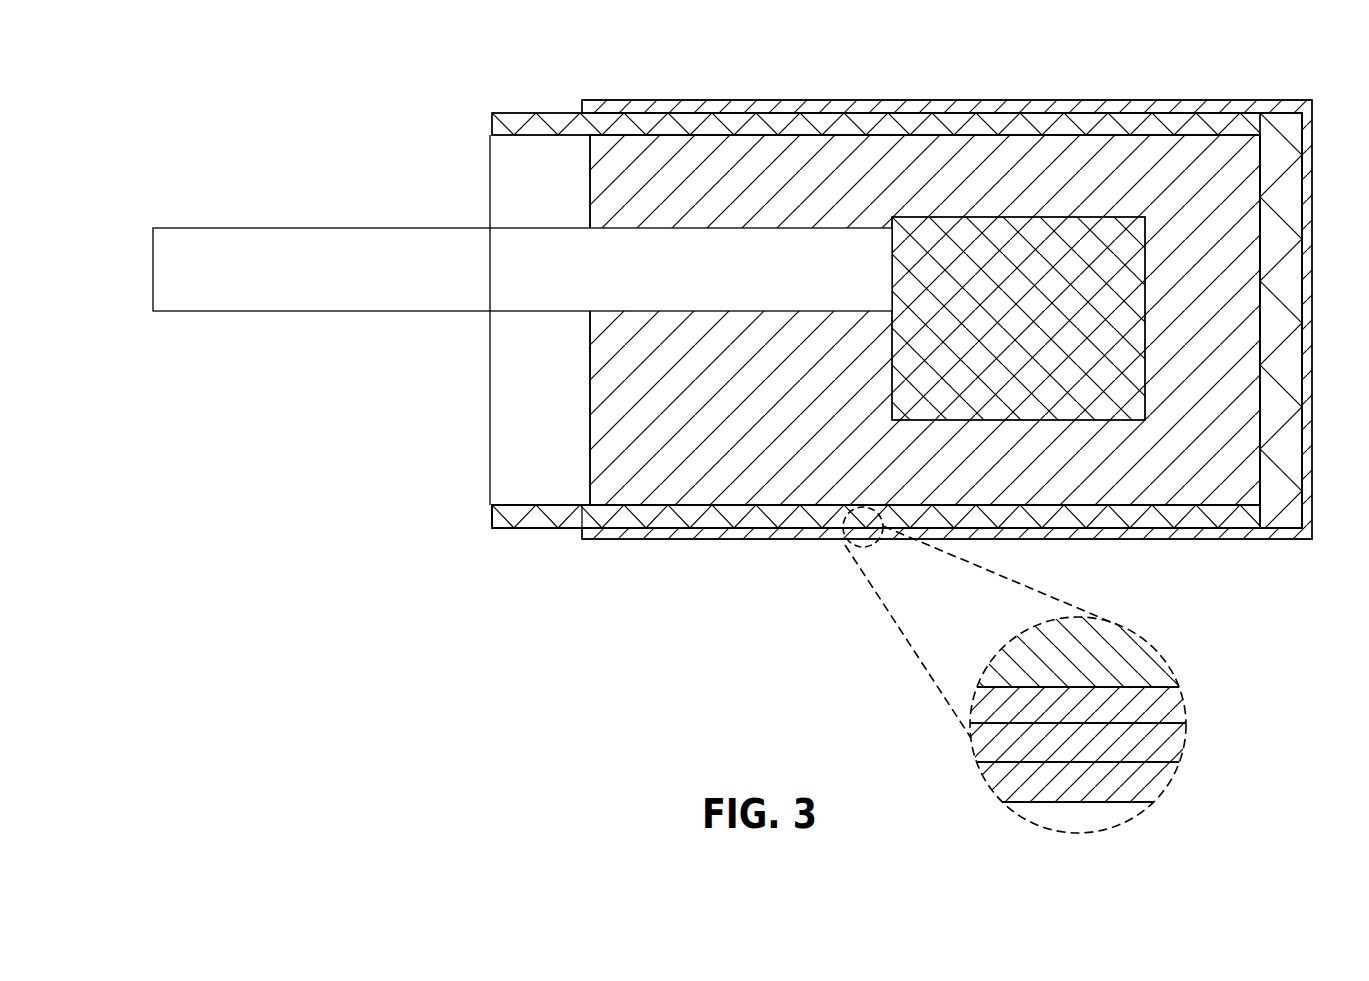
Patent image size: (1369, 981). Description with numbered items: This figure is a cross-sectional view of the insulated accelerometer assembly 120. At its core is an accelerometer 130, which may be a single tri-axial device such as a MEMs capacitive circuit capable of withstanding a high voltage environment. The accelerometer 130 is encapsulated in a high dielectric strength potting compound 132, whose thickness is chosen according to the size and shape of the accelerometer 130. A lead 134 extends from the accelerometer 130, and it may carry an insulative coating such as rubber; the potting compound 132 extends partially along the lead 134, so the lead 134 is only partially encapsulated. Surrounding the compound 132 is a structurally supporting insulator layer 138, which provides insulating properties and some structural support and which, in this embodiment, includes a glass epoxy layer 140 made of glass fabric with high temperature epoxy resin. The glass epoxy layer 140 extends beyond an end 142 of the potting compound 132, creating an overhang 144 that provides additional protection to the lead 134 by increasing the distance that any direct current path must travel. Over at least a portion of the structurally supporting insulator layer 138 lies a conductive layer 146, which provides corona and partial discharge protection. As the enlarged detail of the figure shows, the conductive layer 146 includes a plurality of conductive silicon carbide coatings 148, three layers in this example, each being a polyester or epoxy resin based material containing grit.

The insulated accelerometer assembly 120 is at (618, 86).
The accelerometer 130 is at (1030, 225).
The high dielectric strength potting compound 132 is at (845, 172).
The lead 134 is at (297, 227).
The structurally supporting insulator layer 138 is at (627, 513).
The glass epoxy layer 140 is at (876, 516).
The end 142 is at (590, 183).
The overhang 144 is at (530, 507).
The conductive layer 146 is at (748, 540).
The conductive silicon carbide coating 148 is at (1160, 698).